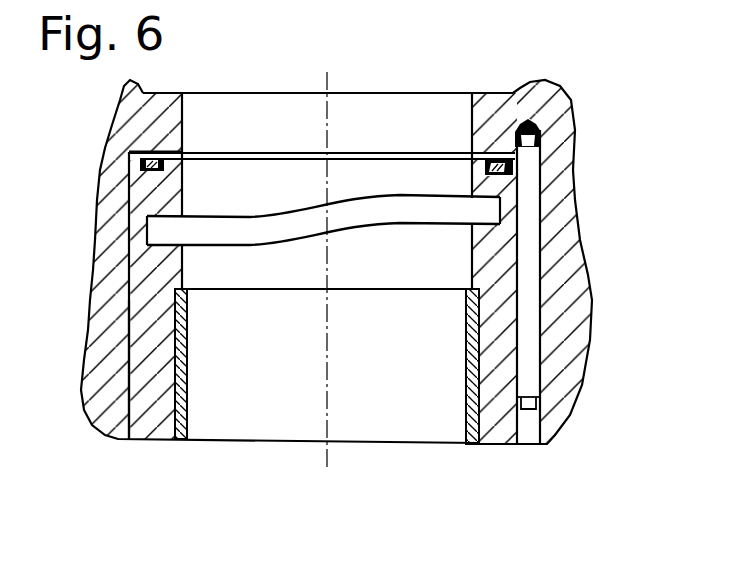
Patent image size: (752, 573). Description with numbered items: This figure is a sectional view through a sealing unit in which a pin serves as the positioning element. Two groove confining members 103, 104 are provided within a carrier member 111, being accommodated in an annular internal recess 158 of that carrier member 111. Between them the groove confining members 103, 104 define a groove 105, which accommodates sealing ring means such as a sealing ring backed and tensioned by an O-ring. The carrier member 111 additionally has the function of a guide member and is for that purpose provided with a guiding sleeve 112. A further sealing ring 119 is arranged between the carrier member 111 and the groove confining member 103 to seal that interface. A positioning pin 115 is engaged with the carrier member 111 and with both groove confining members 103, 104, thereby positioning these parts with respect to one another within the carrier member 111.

The groove confining member 103 is at (136, 197).
The groove confining member 104 is at (142, 316).
The groove 105 is at (155, 233).
The carrier member 111 is at (556, 189).
The guiding sleeve 112 is at (472, 413).
The positioning pin 115 is at (532, 334).
The further sealing ring 119 is at (134, 152).
The annular internal recess 158 is at (124, 386).